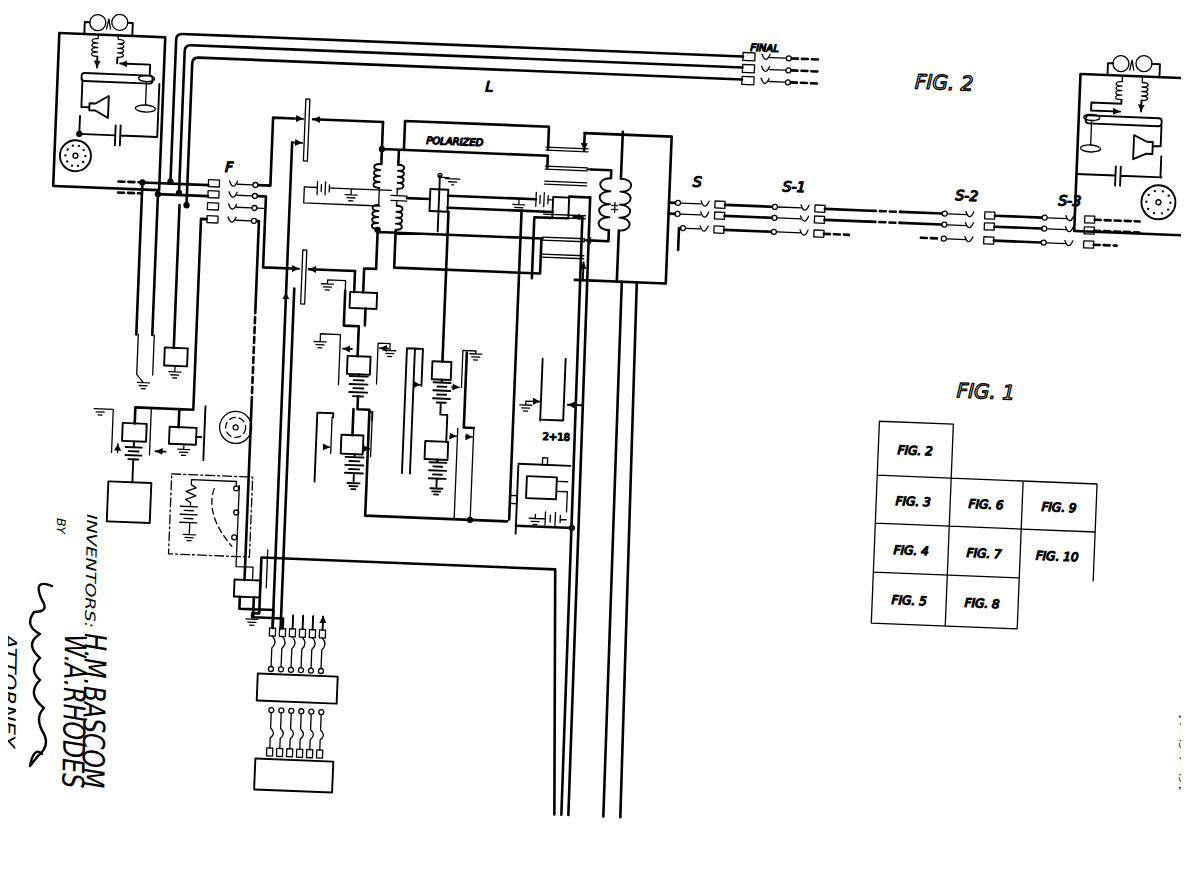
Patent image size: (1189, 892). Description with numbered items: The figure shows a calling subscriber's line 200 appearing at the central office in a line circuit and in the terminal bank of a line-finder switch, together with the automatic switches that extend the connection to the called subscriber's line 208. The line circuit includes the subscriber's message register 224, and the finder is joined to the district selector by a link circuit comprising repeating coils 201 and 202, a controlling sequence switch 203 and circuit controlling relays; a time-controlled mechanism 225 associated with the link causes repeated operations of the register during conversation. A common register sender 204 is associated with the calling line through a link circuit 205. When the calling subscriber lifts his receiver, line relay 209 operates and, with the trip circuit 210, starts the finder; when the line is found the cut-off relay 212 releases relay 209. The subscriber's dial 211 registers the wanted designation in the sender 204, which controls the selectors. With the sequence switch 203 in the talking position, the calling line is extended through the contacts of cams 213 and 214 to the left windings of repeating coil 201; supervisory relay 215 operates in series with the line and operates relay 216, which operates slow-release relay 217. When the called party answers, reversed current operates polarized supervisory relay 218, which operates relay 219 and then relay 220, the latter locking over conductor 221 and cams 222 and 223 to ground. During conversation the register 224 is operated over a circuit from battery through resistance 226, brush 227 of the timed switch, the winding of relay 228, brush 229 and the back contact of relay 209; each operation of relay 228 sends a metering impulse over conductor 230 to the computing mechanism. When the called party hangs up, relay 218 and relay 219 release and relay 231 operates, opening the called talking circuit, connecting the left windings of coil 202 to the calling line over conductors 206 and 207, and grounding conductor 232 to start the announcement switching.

The calling subscriber's line 200 is at (98, 201).
The repeating coil 201 is at (372, 170).
The repeating coil 202 is at (611, 177).
The controlling sequence switch 203 is at (562, 488).
The register sender 204 is at (270, 788).
The link circuit 205 is at (349, 700).
The talking conductor 206 is at (637, 470).
The talking conductor 207 is at (620, 532).
The called subscriber's line 208 is at (1142, 200).
The line relay 209 is at (132, 441).
The trip circuit 210 is at (131, 540).
The dial 211 is at (84, 176).
The cut-off relay 212 is at (187, 366).
The cam 213 is at (295, 112).
The cam 214 is at (301, 263).
The supervisory relay 215 is at (374, 310).
The relay 216 is at (364, 365).
The slow-release relay 217 is at (350, 472).
The polarized supervisory relay 218 is at (441, 210).
The relay 219 is at (450, 368).
The relay 220 is at (435, 466).
The conductor 221 is at (574, 532).
The sequence switch cam 222 is at (565, 360).
The sequence switch cam 223 is at (541, 376).
The message register 224 is at (186, 443).
The time-controlled mechanism 225 is at (185, 576).
The resistance 226 is at (196, 497).
The brush 227 is at (221, 566).
The relay 228 is at (242, 606).
The brush 229 is at (238, 237).
The conductor 230 is at (562, 658).
The relay 231 is at (543, 215).
The conductor 232 is at (583, 375).